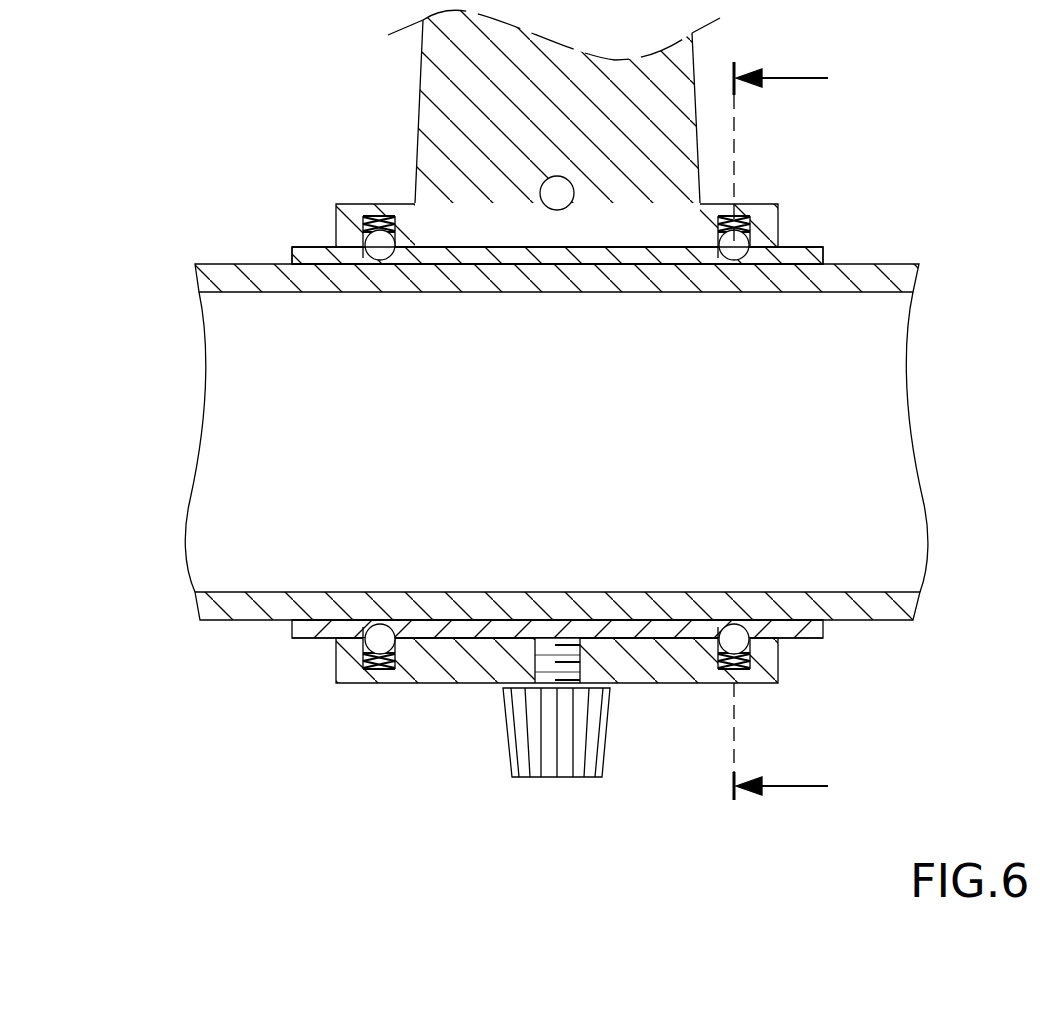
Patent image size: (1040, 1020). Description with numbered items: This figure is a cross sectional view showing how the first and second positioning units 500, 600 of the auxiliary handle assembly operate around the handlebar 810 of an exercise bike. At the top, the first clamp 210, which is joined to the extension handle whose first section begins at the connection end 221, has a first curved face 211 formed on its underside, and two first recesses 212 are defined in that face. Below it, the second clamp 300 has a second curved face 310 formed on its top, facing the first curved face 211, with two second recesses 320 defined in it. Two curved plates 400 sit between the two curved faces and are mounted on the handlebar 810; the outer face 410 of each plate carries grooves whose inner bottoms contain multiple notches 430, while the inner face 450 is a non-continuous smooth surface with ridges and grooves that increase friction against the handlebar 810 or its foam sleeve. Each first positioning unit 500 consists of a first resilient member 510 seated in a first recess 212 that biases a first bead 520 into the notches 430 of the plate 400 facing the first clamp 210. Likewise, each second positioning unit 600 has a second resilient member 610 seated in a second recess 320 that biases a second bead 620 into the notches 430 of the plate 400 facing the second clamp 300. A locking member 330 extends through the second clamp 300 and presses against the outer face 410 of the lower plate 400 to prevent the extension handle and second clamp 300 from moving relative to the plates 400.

The first clamp 210 is at (365, 216).
The first curved face 211 is at (493, 248).
The first recesses 212 is at (363, 218).
The connection end 221 is at (425, 66).
The second clamp 300 is at (436, 684).
The second curved face 310 is at (490, 637).
The second recesses 320 is at (362, 682).
The locking member 330 is at (520, 755).
The plates 400 is at (815, 256).
The outer face 410 is at (557, 442).
The notches 430 is at (379, 265).
The inner face 450 is at (668, 265).
The first positioning units 500 is at (525, 212).
The first resilient member 510 is at (363, 229).
The first bead 520 is at (368, 241).
The second positioning units 600 is at (525, 673).
The second resilient member 610 is at (363, 657).
The second bead 620 is at (366, 641).
The handlebar 810 is at (913, 607).